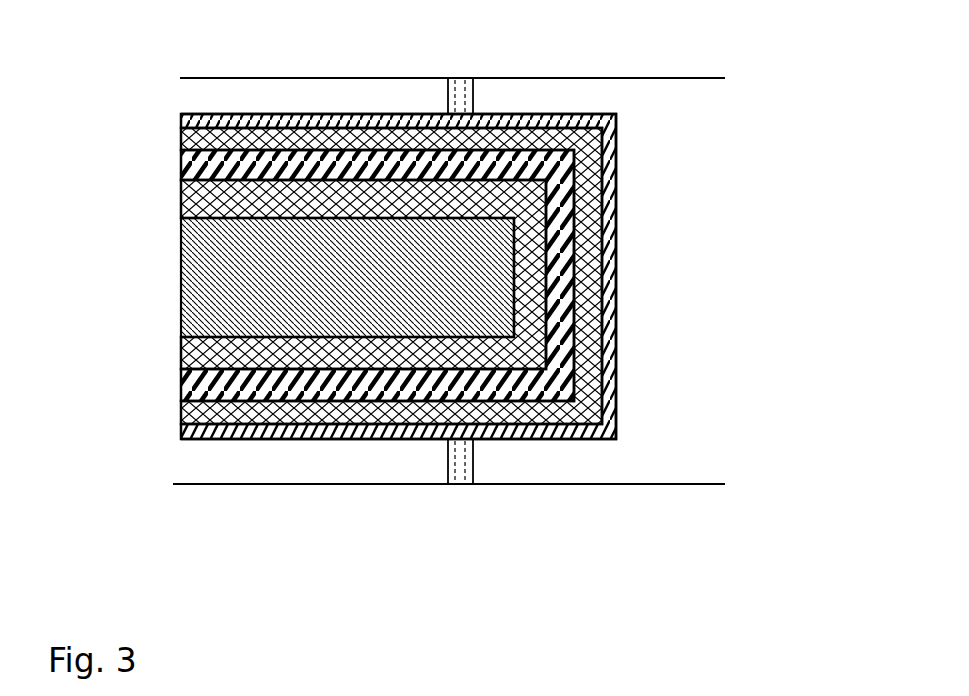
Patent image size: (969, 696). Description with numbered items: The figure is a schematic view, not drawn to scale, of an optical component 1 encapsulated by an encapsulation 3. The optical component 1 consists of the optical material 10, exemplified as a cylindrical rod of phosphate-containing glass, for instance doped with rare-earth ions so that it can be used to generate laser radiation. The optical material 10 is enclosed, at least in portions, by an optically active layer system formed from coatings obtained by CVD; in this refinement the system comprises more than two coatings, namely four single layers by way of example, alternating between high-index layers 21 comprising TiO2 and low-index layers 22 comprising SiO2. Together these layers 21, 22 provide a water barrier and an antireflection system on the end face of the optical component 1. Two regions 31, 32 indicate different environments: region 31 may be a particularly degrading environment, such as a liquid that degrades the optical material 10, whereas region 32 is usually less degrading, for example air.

The optical component 1 is at (68, 310).
The optical material 10 is at (187, 247).
The high-index layer 21 is at (187, 353).
The low-index layer 22 is at (575, 172).
The encapsulation 3 is at (448, 450).
The region 31 is at (342, 107).
The region 32 is at (522, 88).